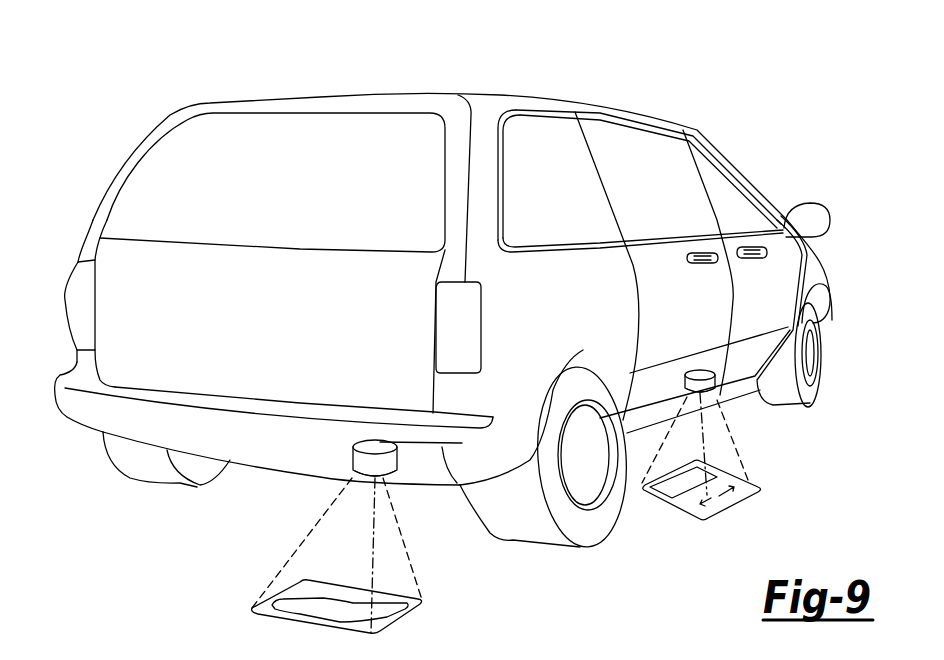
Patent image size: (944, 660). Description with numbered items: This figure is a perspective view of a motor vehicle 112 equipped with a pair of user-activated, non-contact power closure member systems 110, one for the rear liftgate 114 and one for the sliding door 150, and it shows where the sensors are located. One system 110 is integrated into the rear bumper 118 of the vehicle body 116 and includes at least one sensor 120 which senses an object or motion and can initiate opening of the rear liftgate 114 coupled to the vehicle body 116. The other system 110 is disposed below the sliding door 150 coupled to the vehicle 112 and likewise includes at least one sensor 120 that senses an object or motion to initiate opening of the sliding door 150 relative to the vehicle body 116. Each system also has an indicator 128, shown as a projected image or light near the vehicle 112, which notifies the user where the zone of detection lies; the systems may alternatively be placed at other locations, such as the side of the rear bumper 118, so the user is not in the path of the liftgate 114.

The vehicle 112 is at (527, 85).
The rear liftgate 114 is at (168, 183).
The vehicle body 116 is at (485, 95).
The rear bumper 118 is at (113, 392).
The sliding door 150 is at (635, 122).
The user-activated, non-contact power closure member system 110 is at (338, 460).
The sensor 120 is at (373, 478).
The indicator 128 is at (383, 618).